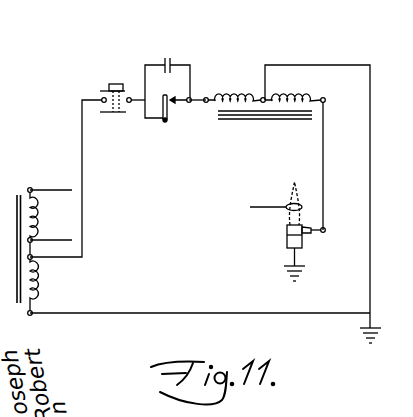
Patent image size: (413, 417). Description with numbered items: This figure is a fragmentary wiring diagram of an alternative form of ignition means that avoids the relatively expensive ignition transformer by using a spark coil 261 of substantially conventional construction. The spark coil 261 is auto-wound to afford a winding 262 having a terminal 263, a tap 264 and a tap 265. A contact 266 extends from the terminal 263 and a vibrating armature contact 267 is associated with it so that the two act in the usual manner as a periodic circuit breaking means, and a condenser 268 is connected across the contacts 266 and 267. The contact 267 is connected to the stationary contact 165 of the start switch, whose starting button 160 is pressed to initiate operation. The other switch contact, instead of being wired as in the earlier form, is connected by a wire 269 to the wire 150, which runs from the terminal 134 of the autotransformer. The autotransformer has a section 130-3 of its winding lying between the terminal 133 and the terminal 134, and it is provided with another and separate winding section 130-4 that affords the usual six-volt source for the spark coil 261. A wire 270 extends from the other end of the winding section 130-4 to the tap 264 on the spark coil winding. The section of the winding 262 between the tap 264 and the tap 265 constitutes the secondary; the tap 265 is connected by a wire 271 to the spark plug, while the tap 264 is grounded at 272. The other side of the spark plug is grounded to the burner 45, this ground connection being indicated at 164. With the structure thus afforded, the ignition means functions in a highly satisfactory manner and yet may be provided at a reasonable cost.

The starting button 160 is at (110, 85).
The stationary switch contact 165 is at (129, 103).
The wire 269 is at (82, 175).
The condenser 268 is at (168, 63).
The contact 266 is at (182, 104).
The vibrating armature contact 267 is at (166, 123).
The terminal 263 is at (207, 97).
The spark coil 261 is at (237, 93).
The winding 262 is at (249, 120).
The tap 264 is at (272, 99).
The tap 265 is at (329, 94).
The wire 271 is at (323, 183).
The burner 45 is at (287, 238).
The ground connection 164 is at (297, 272).
The terminal 133 is at (32, 188).
The section of the transformer winding 130-3 is at (35, 214).
The wire 150 is at (55, 234).
The terminal 134 is at (32, 257).
The winding section 130-4 is at (34, 294).
The wire 270 is at (219, 305).
The ground 272 is at (376, 331).